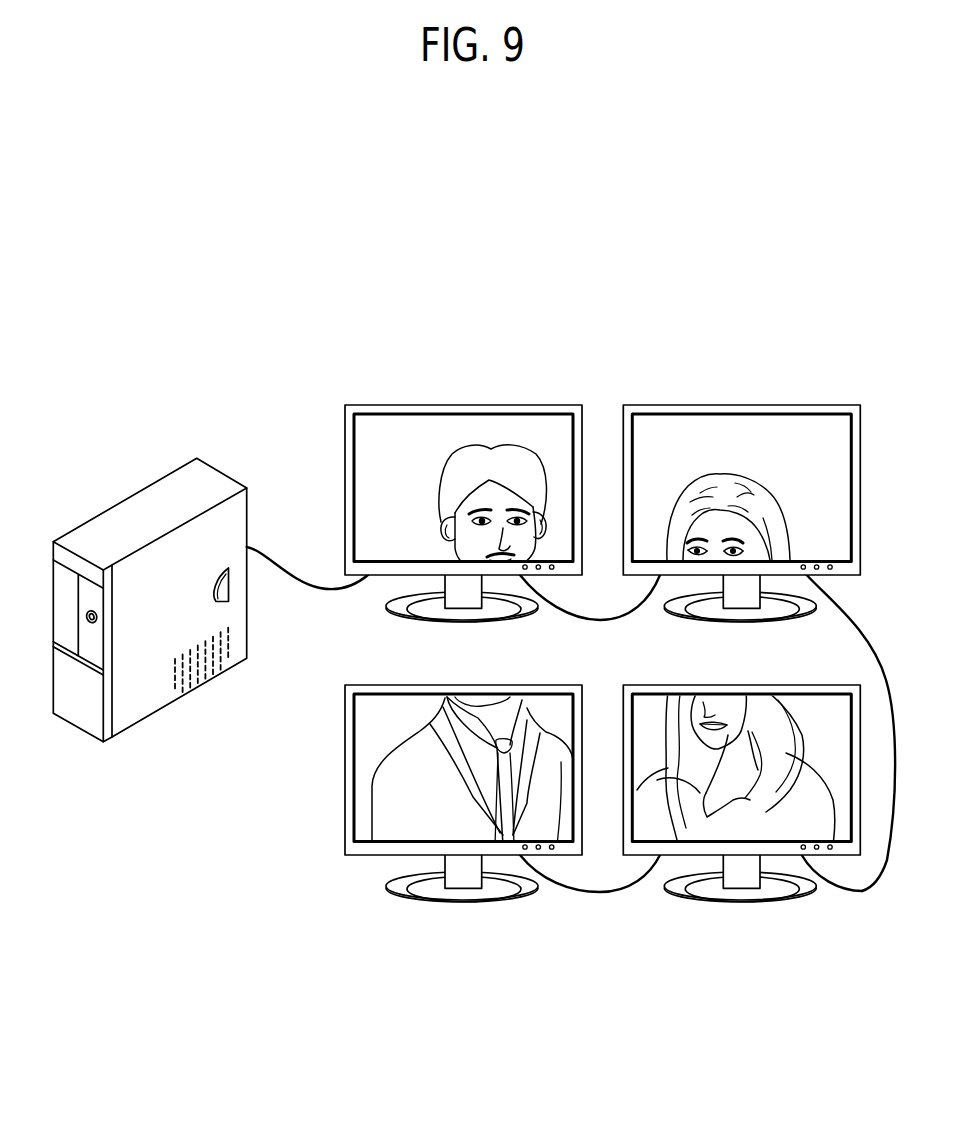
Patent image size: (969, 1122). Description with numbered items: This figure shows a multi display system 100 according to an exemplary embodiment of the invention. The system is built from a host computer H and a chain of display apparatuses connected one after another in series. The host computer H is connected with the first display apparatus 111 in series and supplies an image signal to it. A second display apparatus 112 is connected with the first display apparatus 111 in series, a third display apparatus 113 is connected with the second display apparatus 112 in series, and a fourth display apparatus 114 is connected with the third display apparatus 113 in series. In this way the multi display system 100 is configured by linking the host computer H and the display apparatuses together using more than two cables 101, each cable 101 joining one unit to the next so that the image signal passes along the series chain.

The multi display system 100 is at (221, 293).
The cable 101 is at (307, 593).
The first display apparatus 111 is at (562, 396).
The second display apparatus 112 is at (817, 396).
The third display apparatus 113 is at (403, 923).
The fourth display apparatus 114 is at (681, 923).
The host computer H is at (130, 467).